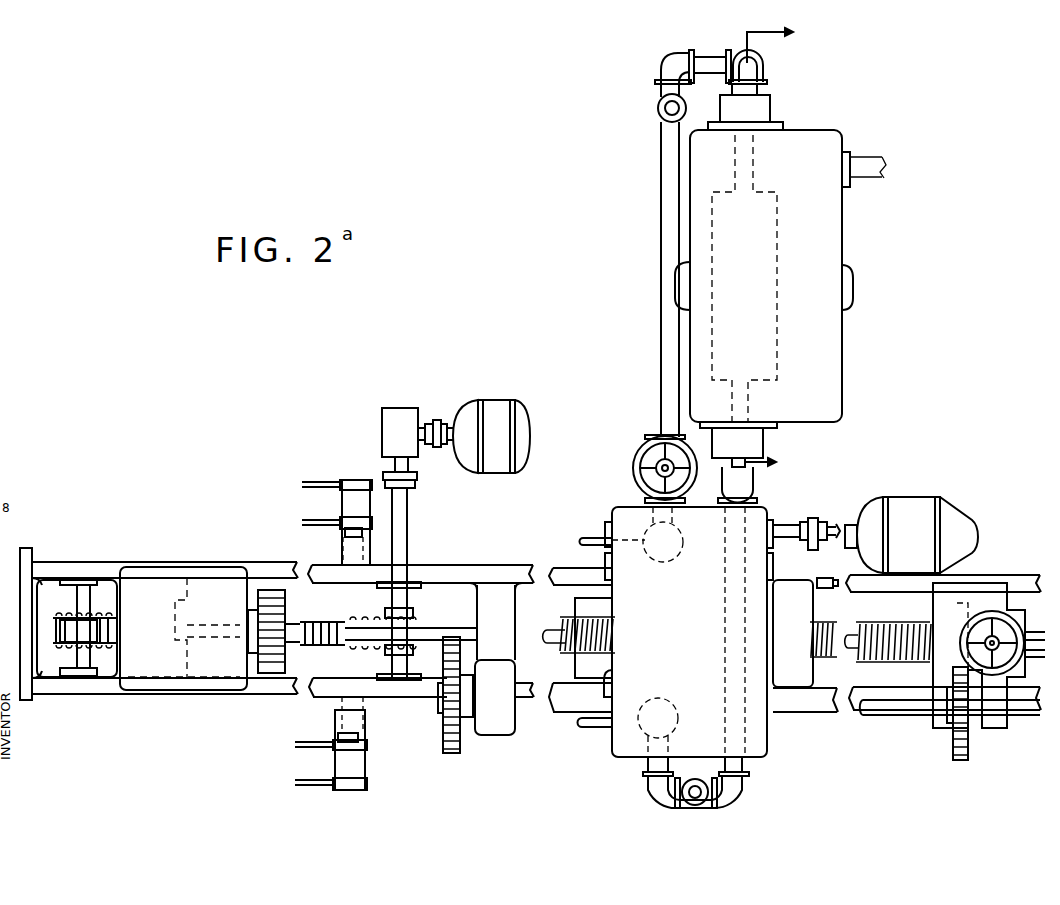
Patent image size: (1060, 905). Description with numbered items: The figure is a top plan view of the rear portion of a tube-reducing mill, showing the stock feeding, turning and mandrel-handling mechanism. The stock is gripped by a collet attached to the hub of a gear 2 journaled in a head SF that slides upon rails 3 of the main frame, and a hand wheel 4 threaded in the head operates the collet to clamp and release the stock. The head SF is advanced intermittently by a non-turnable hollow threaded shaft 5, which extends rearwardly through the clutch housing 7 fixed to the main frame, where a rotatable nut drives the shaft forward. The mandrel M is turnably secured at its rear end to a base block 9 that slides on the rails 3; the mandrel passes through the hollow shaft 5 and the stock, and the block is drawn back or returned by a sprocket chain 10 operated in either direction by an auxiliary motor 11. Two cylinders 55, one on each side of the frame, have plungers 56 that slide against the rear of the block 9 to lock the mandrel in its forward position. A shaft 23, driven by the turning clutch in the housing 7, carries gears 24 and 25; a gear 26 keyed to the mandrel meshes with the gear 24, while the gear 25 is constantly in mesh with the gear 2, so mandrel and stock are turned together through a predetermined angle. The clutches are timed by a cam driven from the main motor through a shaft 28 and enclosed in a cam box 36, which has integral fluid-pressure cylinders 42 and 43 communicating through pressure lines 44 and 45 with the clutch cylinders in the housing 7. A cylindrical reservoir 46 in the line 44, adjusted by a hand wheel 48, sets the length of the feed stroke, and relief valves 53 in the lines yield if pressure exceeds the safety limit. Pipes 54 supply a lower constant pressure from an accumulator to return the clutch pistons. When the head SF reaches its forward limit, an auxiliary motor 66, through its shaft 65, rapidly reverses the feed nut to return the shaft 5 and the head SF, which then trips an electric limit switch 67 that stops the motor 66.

The gear 2 is at (965, 605).
The rails 3 is at (78, 718).
The hand wheel 4 is at (985, 616).
The threaded shaft 5 is at (566, 620).
The clutch housing 7 is at (688, 632).
The base block 9 is at (220, 555).
The sprocket chain 10 is at (62, 642).
The auxiliary motor 11 is at (453, 540).
The shaft 23 is at (520, 720).
The gear 24 is at (455, 755).
The gear 25 is at (953, 748).
The gear 26 is at (270, 676).
The shaft 28 is at (865, 180).
The cam box 36 is at (780, 276).
The fluid-pressure cylinder 42 is at (770, 110).
The fluid-pressure cylinder 43 is at (765, 447).
The pressure line 44 is at (765, 70).
The pressure line 45 is at (755, 482).
The cylindrical reservoir 46 is at (652, 460).
The hand wheel 48 is at (633, 470).
The relief valve 53 is at (657, 108).
The pipes 54 is at (595, 536).
The cylinders 55 is at (352, 480).
The plungers 56 is at (345, 532).
The shaft 65 is at (790, 527).
The auxiliary motor 66 is at (911, 535).
The electric limit switch 67 is at (822, 578).
The mandrel M is at (290, 642).
The head SF is at (995, 735).